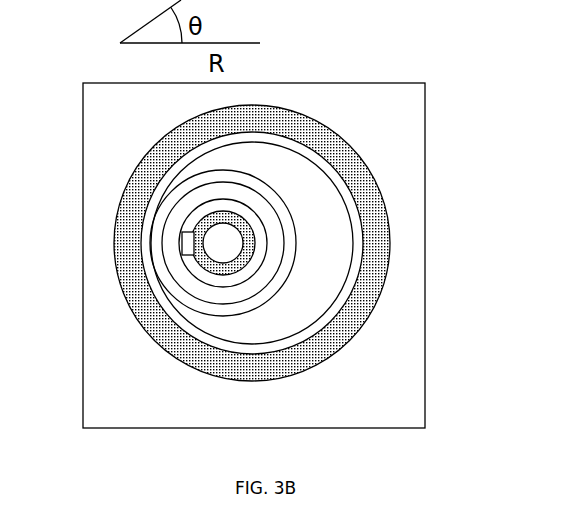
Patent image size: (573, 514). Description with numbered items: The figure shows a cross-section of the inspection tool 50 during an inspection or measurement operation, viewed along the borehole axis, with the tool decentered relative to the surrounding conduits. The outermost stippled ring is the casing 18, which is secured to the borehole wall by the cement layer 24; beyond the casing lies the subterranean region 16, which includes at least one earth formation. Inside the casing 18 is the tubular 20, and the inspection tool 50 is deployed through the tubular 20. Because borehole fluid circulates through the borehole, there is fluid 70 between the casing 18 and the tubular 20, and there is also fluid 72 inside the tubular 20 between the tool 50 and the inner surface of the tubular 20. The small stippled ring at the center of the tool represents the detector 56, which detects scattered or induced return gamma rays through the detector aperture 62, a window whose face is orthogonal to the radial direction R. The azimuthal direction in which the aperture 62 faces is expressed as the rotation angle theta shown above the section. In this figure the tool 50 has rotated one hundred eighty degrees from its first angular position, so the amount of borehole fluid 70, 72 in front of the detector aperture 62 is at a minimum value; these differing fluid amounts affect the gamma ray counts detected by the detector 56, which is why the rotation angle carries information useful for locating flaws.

The subterranean region 16 is at (407, 152).
The casing 18 is at (361, 238).
The tubular 20 is at (290, 220).
The cement layer 24 is at (333, 140).
The inspection tool 50 is at (198, 273).
The detector 56 is at (215, 227).
The detector aperture 62 is at (182, 238).
The borehole fluid between casing and tubular 70 is at (320, 283).
The fluid in tubular 72 is at (223, 297).